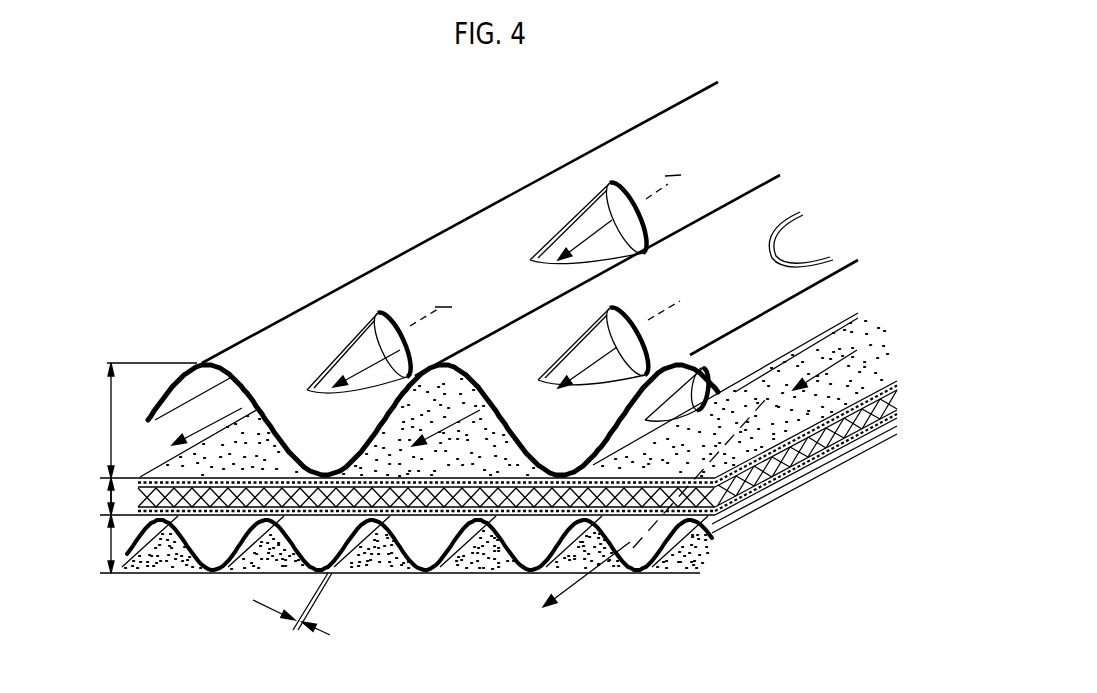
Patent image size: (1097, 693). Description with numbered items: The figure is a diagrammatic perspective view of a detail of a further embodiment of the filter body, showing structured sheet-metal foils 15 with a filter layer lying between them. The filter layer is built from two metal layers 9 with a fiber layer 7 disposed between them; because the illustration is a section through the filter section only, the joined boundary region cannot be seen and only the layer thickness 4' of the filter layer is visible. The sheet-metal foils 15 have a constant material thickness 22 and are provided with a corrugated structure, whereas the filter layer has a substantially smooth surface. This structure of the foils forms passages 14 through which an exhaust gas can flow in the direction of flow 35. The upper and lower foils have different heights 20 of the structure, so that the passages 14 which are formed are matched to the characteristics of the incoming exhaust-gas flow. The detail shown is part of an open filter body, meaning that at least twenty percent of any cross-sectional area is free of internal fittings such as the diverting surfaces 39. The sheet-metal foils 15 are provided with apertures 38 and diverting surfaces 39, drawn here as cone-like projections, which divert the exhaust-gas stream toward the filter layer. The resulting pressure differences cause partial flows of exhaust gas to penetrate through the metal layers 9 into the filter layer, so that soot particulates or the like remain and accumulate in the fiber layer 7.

The layer thickness 4' is at (87, 496).
The fiber layer 7 is at (767, 467).
The metal layers 9 is at (725, 508).
The passages 14 is at (212, 545).
The sheet-metal foils 15 is at (258, 347).
The heights of the structure 20 is at (111, 417).
The material thickness 22 is at (302, 618).
The direction of flow 35 is at (672, 176).
The apertures 38 is at (380, 333).
The diverting surfaces 39 is at (333, 360).